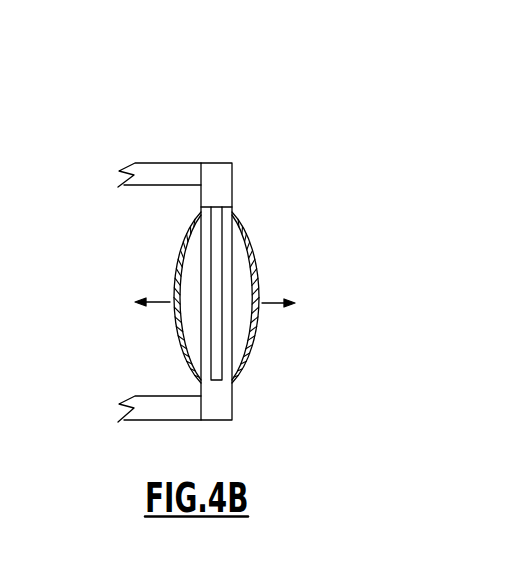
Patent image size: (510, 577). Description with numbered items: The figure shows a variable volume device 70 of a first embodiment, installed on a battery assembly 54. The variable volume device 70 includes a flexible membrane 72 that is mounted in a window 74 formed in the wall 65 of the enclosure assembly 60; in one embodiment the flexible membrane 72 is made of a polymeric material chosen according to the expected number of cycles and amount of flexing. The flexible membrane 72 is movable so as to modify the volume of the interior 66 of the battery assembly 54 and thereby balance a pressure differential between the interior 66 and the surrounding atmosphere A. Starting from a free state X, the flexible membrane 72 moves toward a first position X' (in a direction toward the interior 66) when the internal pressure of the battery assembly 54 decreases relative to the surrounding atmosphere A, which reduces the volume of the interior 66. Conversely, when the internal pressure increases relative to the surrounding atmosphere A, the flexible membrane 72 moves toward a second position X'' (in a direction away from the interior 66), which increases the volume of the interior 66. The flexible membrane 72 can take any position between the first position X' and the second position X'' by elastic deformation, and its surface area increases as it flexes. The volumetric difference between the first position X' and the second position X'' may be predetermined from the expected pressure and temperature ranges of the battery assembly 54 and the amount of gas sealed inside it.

The battery assembly 54 is at (232, 241).
The enclosure assembly 60 is at (156, 144).
The wall 65 is at (251, 179).
The interior 66 is at (181, 285).
The variable volume device 70 is at (153, 389).
The flexible membrane 72 is at (229, 288).
The window 74 is at (234, 256).
The free state X is at (257, 359).
The first position X' is at (132, 253).
The second position X'' is at (291, 253).
The surrounding atmosphere A is at (339, 253).